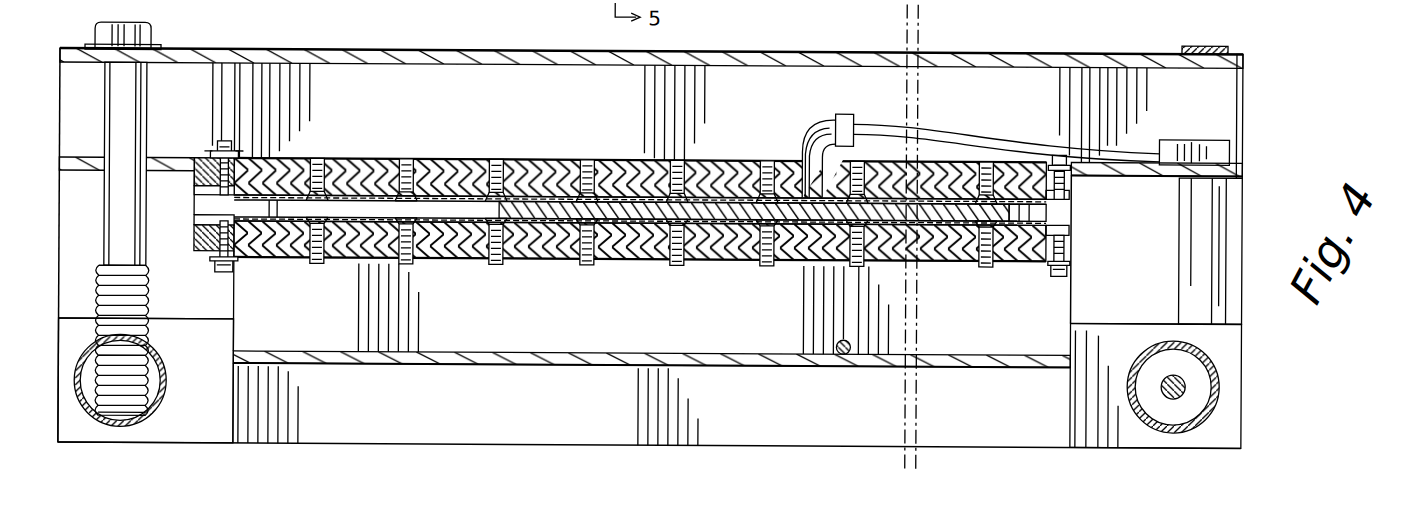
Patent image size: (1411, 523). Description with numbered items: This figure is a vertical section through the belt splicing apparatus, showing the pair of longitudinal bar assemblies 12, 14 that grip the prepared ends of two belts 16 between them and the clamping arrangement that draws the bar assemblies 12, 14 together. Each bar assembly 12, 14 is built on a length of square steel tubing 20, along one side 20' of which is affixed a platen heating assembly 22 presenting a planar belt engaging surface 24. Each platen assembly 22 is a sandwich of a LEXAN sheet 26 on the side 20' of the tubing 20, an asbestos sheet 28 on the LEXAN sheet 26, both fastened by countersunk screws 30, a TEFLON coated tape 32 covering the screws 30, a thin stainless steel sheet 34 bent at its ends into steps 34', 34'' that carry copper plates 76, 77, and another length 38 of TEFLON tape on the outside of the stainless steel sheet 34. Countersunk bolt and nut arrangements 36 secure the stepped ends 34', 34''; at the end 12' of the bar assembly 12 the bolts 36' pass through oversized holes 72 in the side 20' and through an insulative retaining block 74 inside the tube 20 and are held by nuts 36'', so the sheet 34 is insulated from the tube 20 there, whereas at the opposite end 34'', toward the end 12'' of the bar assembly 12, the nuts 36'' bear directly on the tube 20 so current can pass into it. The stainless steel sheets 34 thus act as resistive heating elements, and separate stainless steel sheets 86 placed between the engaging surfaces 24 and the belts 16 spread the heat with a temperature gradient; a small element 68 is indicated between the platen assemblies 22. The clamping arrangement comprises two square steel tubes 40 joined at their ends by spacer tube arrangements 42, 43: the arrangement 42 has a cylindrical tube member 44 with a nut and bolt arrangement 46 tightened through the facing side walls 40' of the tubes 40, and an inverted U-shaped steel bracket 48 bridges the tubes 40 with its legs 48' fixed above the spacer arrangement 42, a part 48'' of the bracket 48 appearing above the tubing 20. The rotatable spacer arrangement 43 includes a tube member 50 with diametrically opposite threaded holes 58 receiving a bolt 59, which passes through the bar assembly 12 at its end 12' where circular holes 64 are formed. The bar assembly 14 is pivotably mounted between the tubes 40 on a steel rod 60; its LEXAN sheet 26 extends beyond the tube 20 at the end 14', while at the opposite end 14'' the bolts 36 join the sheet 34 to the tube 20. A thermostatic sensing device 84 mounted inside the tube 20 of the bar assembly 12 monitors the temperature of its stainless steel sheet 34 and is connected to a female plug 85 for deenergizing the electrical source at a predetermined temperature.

The bar assembly 12 is at (651, 42).
The end of bar assembly 12' is at (79, 227).
The right frame end 12'' is at (1258, 98).
The bar assembly 14 is at (563, 355).
The end of bar assembly 14' is at (650, 302).
The opposite end of bar assembly 14'' is at (1156, 311).
The belt 16 is at (545, 222).
The square steel tubing 20 is at (652, 213).
The side of tubing 20' is at (967, 230).
The platen heating assembly 22 is at (240, 198).
The belt engaging surface 24 is at (240, 222).
The LEXAN polymeric sheet 26 is at (418, 165).
The asbestos sheet 28 is at (548, 185).
The countersunk screws 30 is at (497, 157).
The TEFLON coated tape 32 is at (1003, 226).
The stainless steel sheet 34 is at (960, 202).
The stepped end of stainless steel sheet 34' is at (194, 213).
The opposite stepped end of stainless steel sheet 34'' is at (1082, 212).
The countersunk bolt and nut arrangements 36 is at (641, 209).
The bolts 36' is at (197, 286).
The nuts 36'' is at (632, 207).
The TEFLON coated tape 38 is at (1048, 175).
The square steel tubes 40 is at (804, 460).
The facing side walls of tubes 40' is at (539, 396).
The spacer tube arrangement 42 is at (1218, 350).
The spacer tube arrangement 43 is at (168, 385).
The cylindrical steel tube member 44 is at (1150, 352).
The nut and bolt arrangement 46 is at (1187, 381).
The U-shaped steel bracket 48 is at (1234, 237).
The legs of bracket 48' is at (1238, 251).
The stop block 48'' is at (1203, 29).
The cylindrical steel tube member 50 is at (103, 345).
The threaded holes 58 is at (148, 352).
The bolt 59 is at (122, 238).
The cylindrical steel rod 60 is at (838, 344).
The circular holes 64 is at (150, 58).
The spacer 68 is at (272, 210).
The oversized holes 72 is at (240, 154).
The electrically insulative retaining block 74 is at (210, 152).
The copper plate 76 is at (190, 212).
The copper plate 77 is at (1070, 188).
The thermostatic sensing device 84 is at (840, 112).
The female plug 85 is at (1185, 134).
The stainless steel sheets 86 is at (358, 196).